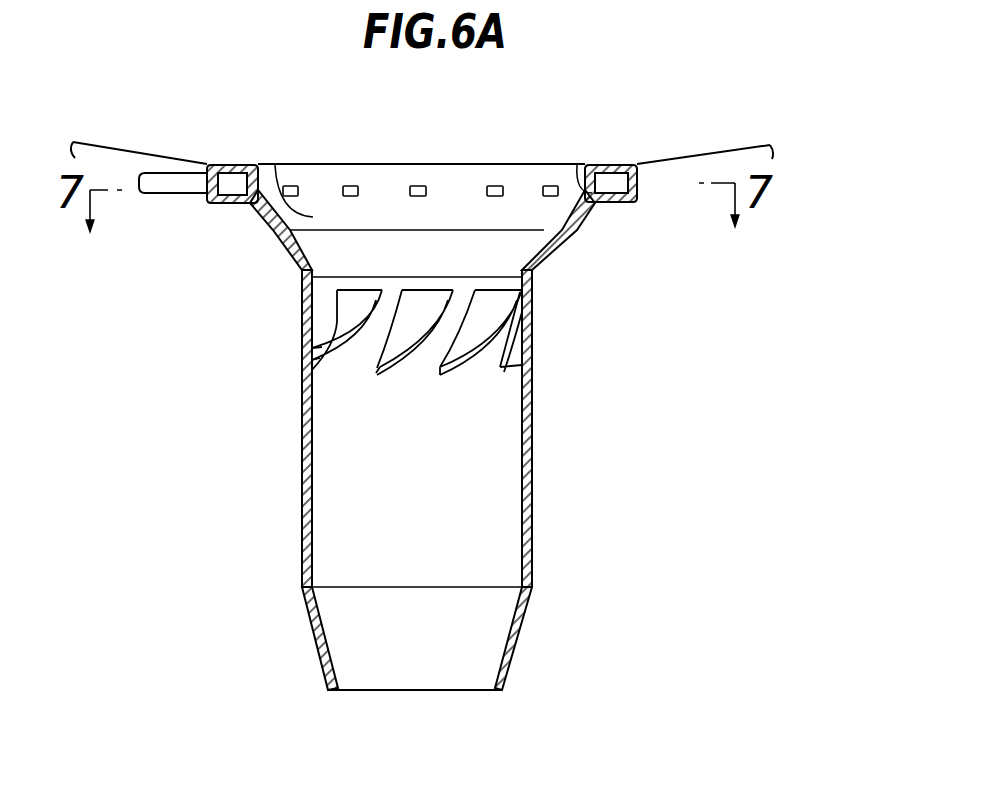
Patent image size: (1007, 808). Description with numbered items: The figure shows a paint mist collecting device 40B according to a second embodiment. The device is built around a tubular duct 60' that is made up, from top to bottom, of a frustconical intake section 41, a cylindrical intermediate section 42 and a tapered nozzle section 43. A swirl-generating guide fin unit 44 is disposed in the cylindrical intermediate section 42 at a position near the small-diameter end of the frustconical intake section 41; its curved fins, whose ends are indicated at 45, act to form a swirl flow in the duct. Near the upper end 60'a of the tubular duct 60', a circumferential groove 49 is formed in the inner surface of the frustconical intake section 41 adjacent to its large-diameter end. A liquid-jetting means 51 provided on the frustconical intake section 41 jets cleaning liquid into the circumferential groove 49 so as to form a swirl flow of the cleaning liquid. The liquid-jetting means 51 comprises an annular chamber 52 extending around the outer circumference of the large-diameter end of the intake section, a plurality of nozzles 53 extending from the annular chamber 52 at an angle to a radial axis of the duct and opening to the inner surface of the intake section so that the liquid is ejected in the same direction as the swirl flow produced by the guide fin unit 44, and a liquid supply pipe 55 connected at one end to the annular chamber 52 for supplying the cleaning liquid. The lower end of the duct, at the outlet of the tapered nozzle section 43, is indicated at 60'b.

The paint mist collecting device 40B is at (197, 537).
The frustconical intake section 41 is at (285, 241).
The cylindrical intermediate section 42 is at (302, 466).
The tapered nozzle section 43 is at (313, 642).
The swirl-generating guide fin unit 44 is at (474, 361).
The vane tips 45 is at (334, 333).
The circumferential groove 49 is at (322, 176).
The liquid-jetting means 51 is at (640, 165).
The annular chamber 52 is at (227, 164).
The nozzles 53 is at (276, 172).
The liquid supply pipe 55 is at (167, 197).
The tubular duct 60' is at (419, 403).
The upper end 60'a is at (612, 121).
The lower end of inner tube 60'b is at (455, 723).